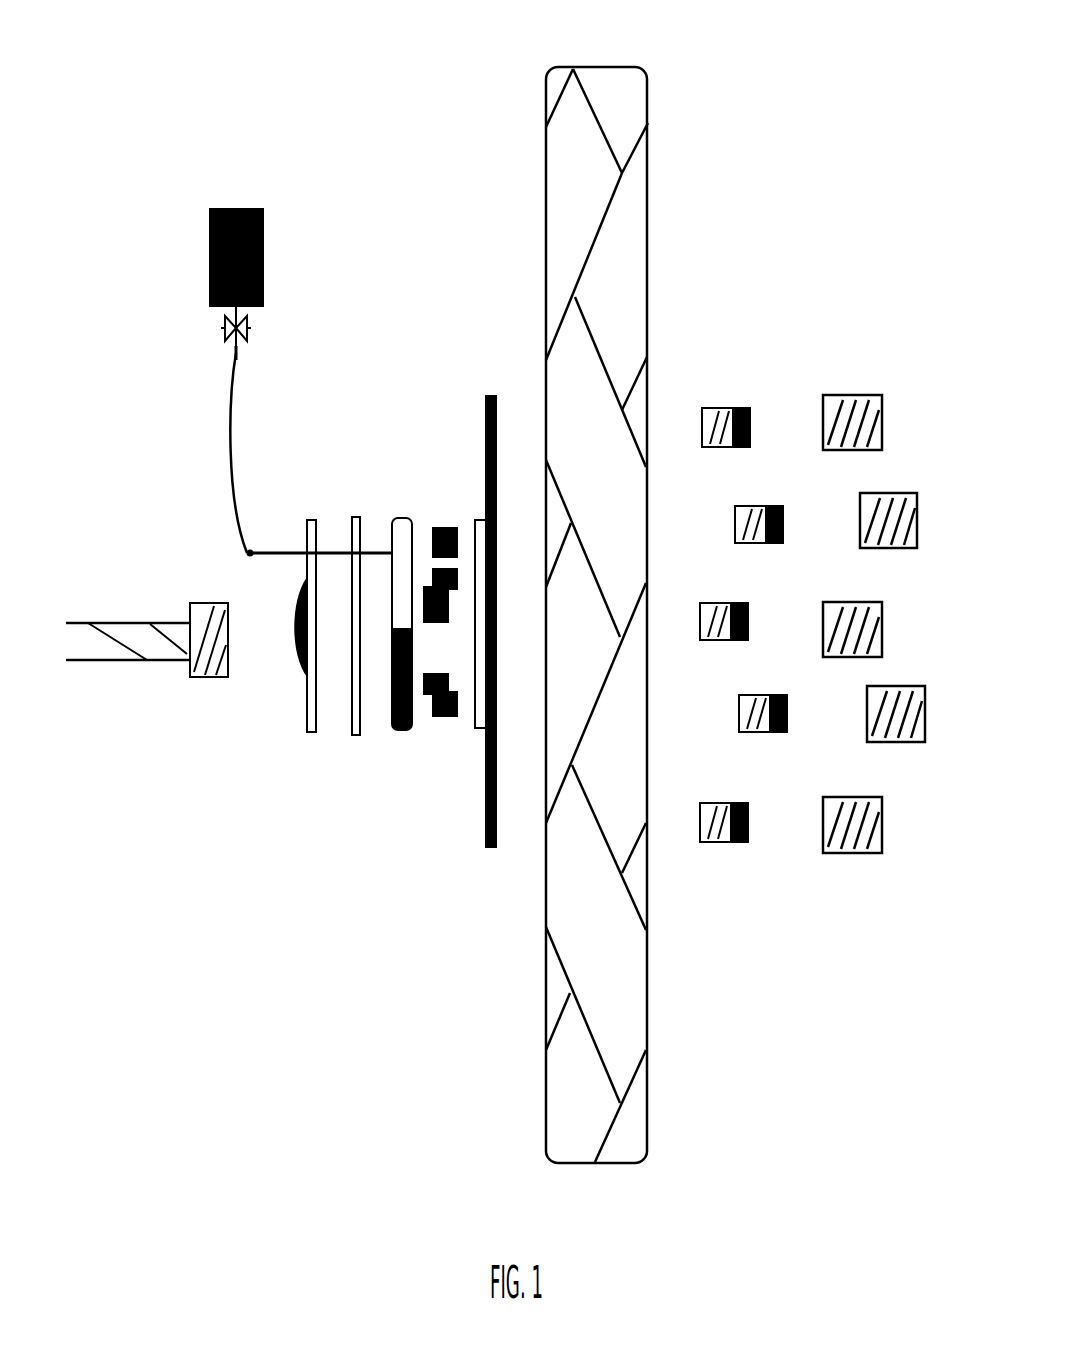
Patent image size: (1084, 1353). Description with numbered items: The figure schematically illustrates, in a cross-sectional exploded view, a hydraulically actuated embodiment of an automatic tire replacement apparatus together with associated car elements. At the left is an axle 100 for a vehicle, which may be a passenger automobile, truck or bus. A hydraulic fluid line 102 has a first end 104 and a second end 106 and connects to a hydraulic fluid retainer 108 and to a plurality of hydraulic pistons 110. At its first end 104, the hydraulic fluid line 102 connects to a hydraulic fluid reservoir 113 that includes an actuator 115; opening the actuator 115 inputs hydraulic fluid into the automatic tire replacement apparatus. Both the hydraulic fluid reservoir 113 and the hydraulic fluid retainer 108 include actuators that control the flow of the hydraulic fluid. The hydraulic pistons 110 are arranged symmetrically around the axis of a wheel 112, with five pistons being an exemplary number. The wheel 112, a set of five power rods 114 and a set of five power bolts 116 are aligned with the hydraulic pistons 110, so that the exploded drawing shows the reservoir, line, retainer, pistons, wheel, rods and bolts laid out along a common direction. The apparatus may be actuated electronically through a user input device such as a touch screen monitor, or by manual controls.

The axle 100 is at (183, 603).
The hydraulic fluid line 102 is at (233, 428).
The first end 104 is at (233, 355).
The second end 106 is at (260, 560).
The hydraulic fluid retainer 108 is at (412, 508).
The hydraulic pistons 110 is at (452, 520).
The wheel 112 is at (655, 158).
The hydraulic fluid reservoir 113 is at (266, 230).
The power rods 114 is at (728, 410).
The actuator 115 is at (249, 328).
The power bolts 116 is at (867, 393).